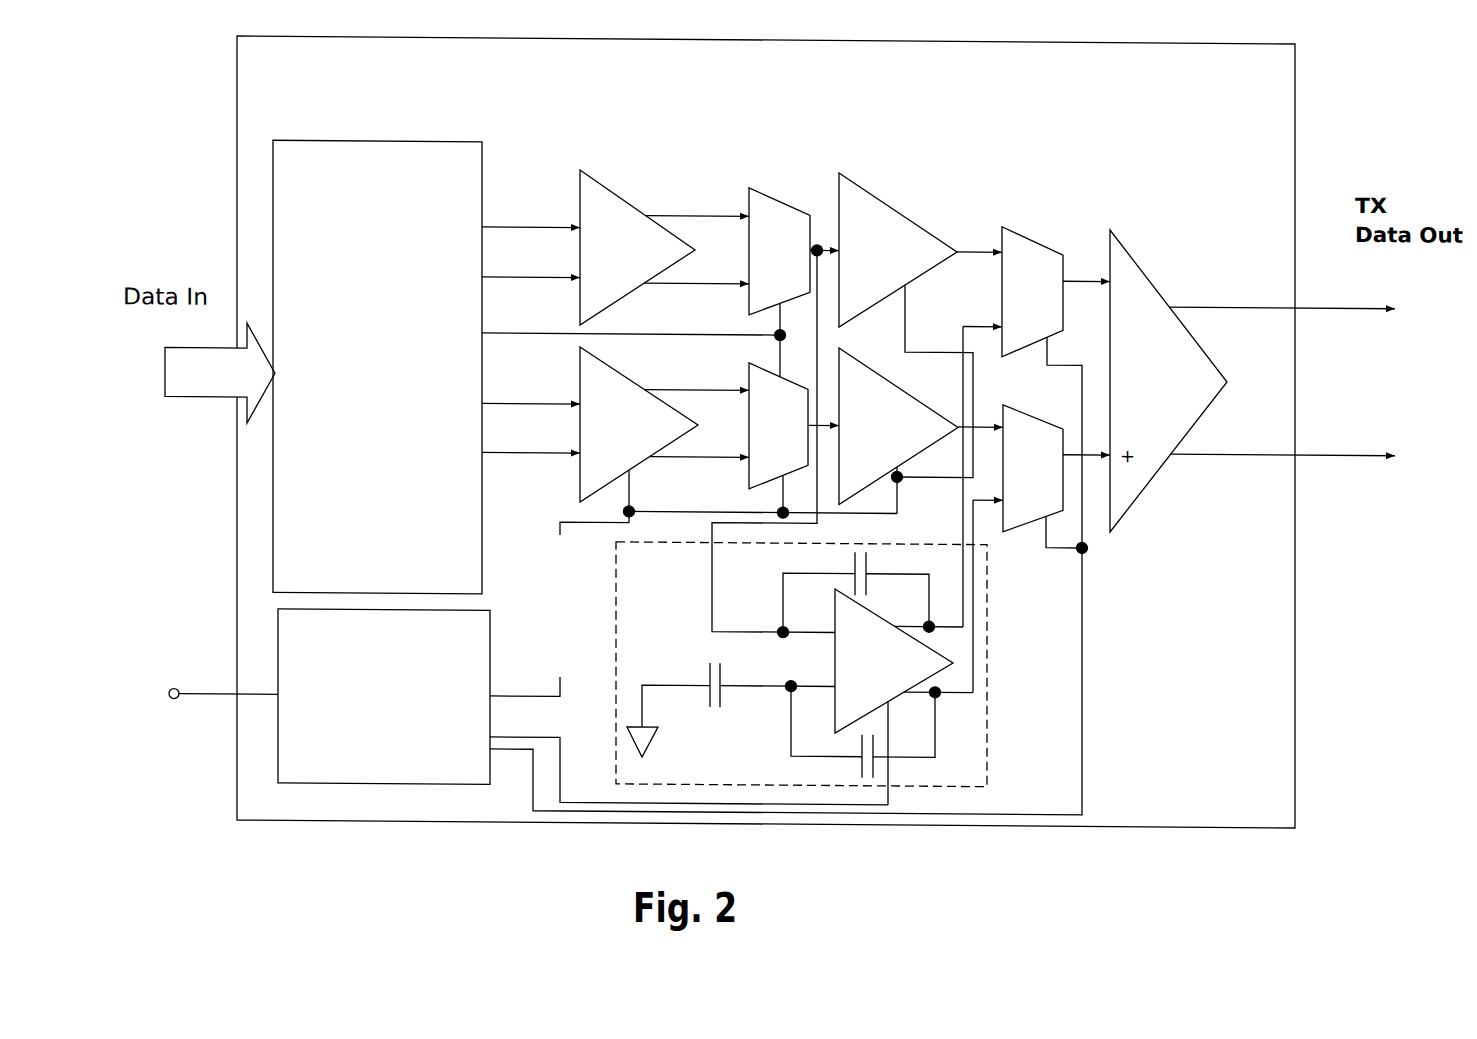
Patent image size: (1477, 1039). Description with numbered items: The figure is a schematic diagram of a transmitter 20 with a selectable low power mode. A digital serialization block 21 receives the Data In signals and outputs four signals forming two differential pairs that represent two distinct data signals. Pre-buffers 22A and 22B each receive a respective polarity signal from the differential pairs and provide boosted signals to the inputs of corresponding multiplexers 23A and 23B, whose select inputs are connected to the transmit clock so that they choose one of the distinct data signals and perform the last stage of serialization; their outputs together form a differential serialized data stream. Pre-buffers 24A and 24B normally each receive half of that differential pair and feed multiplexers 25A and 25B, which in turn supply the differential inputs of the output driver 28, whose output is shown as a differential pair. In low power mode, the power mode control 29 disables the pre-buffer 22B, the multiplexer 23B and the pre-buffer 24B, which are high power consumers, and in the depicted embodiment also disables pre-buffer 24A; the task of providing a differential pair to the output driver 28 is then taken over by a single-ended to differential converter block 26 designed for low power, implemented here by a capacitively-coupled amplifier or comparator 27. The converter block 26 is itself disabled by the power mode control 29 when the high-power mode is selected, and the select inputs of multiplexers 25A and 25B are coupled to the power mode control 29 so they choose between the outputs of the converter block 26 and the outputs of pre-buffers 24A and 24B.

The transmitter 20 is at (418, 72).
The digital serialization block 21 is at (317, 238).
The pre-buffer 22A is at (623, 260).
The pre-buffer 22B is at (640, 435).
The multiplexer 23A is at (797, 244).
The multiplexer 23B is at (797, 421).
The pre-buffer 24A is at (885, 260).
The pre-buffer 24B is at (898, 433).
The multiplexer 25A is at (1051, 284).
The multiplexer 25B is at (1051, 457).
The single-ended to differential converter block 26 is at (655, 578).
The capacitively-coupled amplifier or comparator 27 is at (878, 670).
The output driver 28 is at (1160, 386).
The power mode control 29 is at (322, 646).